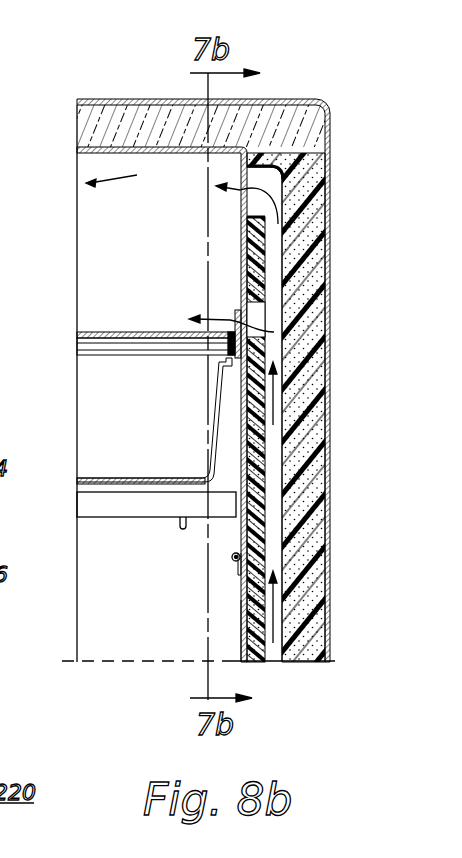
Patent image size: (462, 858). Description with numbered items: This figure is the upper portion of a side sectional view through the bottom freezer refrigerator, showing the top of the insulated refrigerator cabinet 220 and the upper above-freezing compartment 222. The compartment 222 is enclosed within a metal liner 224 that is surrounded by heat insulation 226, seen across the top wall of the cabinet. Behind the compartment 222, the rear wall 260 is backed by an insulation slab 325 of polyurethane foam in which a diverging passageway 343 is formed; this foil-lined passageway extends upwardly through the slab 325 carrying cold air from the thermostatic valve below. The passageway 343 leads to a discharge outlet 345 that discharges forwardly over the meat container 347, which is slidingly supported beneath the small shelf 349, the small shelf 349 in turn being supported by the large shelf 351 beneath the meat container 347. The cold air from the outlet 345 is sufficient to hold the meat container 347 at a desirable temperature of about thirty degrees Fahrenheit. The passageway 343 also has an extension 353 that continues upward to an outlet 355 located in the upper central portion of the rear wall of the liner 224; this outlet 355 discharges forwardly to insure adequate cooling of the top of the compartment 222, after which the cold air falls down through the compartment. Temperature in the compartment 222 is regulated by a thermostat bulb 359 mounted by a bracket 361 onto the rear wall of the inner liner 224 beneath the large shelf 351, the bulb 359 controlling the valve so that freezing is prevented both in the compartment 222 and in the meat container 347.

The insulated refrigerator cabinet 220 is at (374, 68).
The above-freezing compartment 222 is at (121, 599).
The metal liner 224 is at (97, 155).
The heat insulation 226 is at (93, 122).
The insulation slab 325 is at (302, 400).
The diverging passageway 343 is at (275, 541).
The discharge outlet 345 is at (247, 321).
The meat container 347 is at (93, 482).
The small shelf 349 is at (100, 330).
The large shelf 351 is at (105, 510).
The extension 353 is at (275, 235).
The outlet 355 is at (238, 198).
The thermostat bulb 359 is at (232, 556).
The bracket 361 is at (237, 571).
The rear wall 260 is at (245, 617).